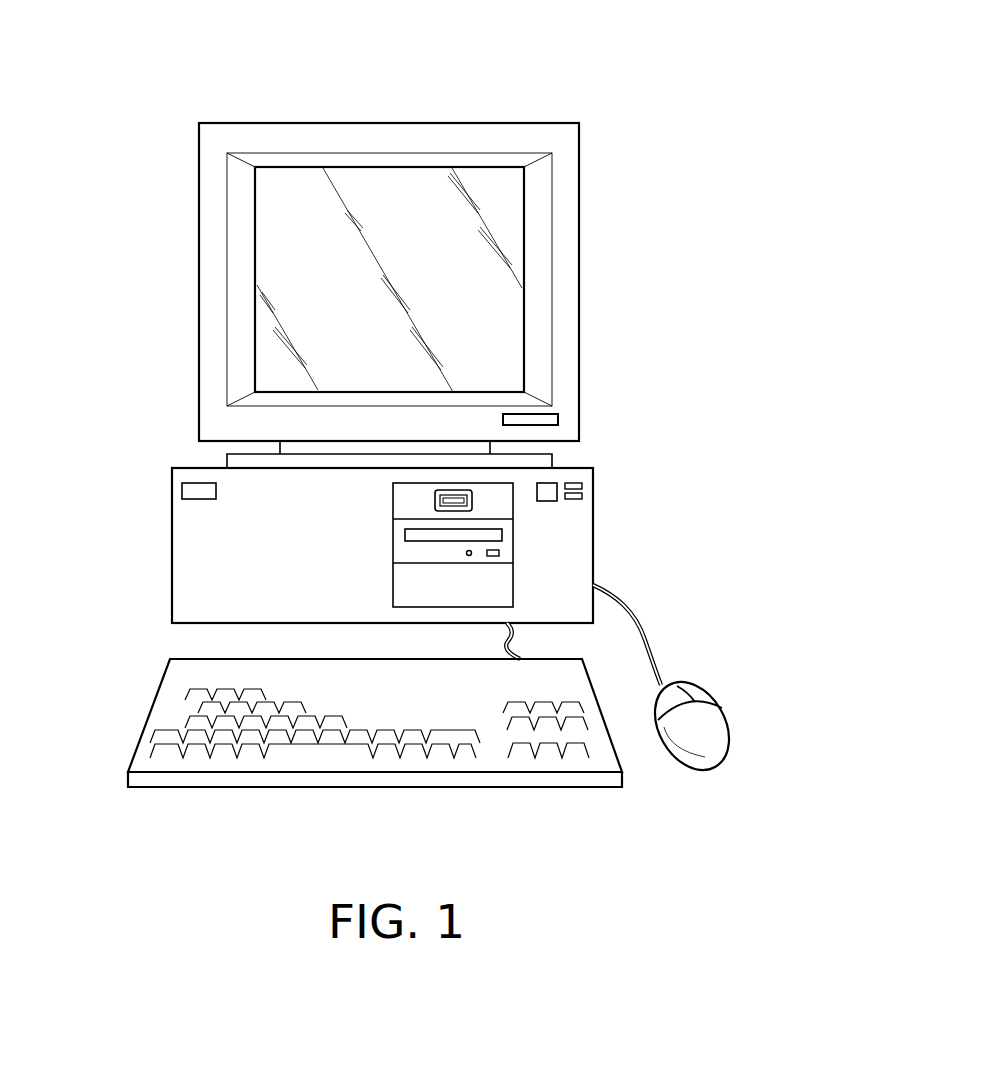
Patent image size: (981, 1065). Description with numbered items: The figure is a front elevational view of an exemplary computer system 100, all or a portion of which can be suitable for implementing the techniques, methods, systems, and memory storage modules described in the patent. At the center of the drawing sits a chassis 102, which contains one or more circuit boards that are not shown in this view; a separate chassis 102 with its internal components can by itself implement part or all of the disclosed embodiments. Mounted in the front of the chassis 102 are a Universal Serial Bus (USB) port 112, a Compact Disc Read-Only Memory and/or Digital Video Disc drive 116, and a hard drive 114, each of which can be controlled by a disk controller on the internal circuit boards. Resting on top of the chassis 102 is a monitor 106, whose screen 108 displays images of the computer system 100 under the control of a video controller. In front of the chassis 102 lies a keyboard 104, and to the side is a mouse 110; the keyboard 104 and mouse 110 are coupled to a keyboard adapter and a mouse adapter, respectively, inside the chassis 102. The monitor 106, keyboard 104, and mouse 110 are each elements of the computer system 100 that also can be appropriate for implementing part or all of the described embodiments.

The computer system 100 is at (574, 96).
The chassis 102 is at (170, 548).
The keyboard 104 is at (153, 712).
The monitor 106 is at (275, 123).
The screen 108 is at (303, 286).
The mouse 110 is at (712, 717).
The Universal Serial Bus (USB) port 112 is at (472, 495).
The hard drive 114 is at (503, 583).
The CD-ROM and/or DVD drive 116 is at (503, 540).